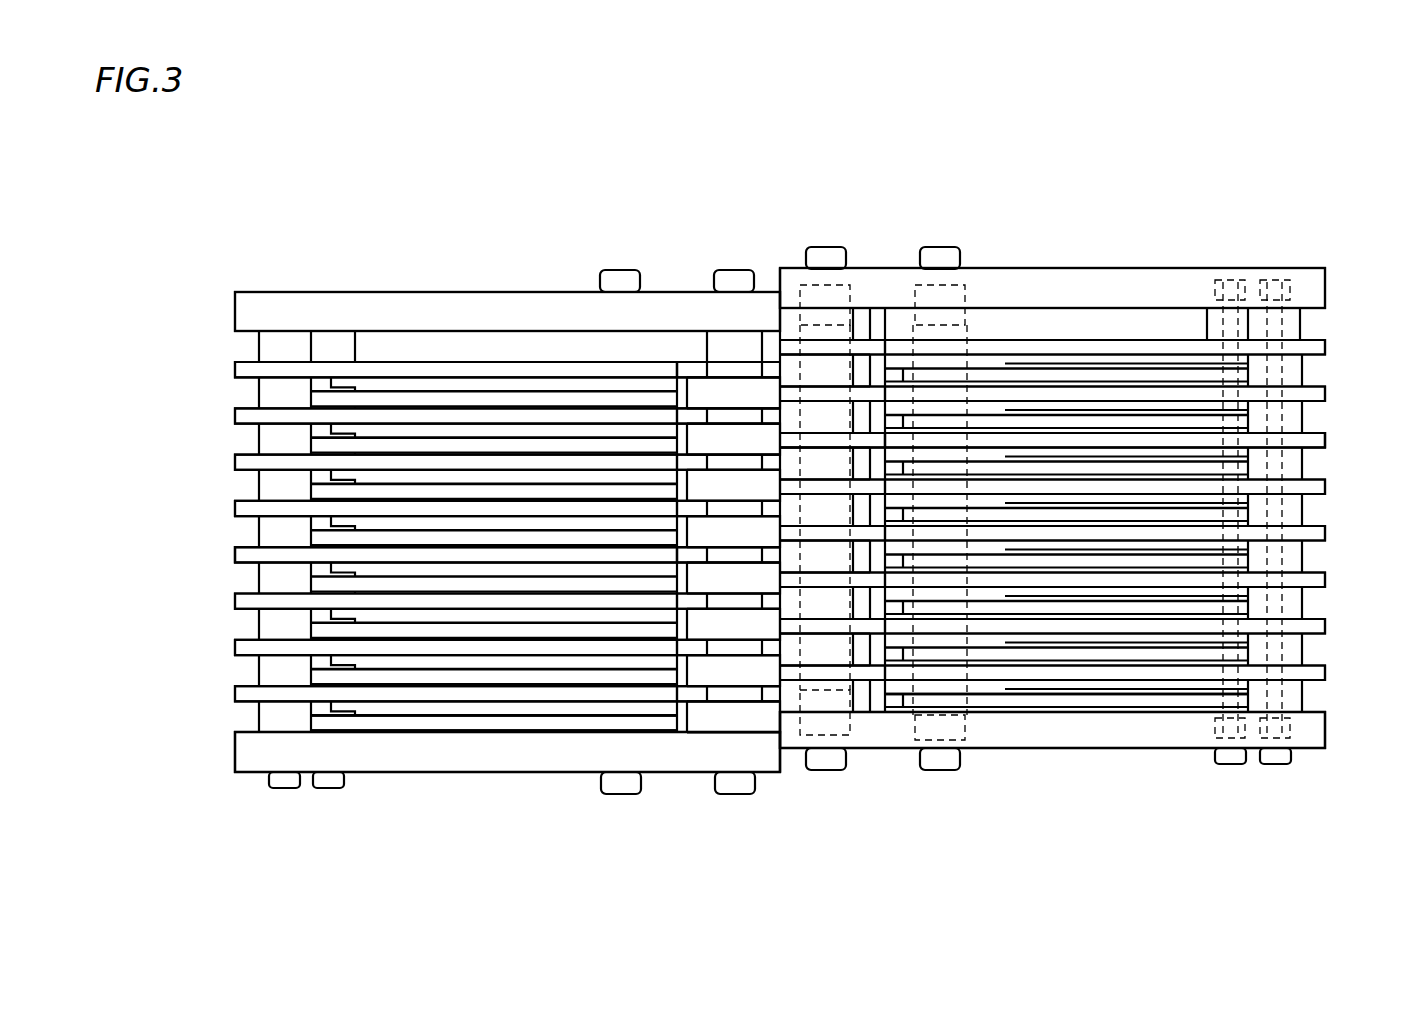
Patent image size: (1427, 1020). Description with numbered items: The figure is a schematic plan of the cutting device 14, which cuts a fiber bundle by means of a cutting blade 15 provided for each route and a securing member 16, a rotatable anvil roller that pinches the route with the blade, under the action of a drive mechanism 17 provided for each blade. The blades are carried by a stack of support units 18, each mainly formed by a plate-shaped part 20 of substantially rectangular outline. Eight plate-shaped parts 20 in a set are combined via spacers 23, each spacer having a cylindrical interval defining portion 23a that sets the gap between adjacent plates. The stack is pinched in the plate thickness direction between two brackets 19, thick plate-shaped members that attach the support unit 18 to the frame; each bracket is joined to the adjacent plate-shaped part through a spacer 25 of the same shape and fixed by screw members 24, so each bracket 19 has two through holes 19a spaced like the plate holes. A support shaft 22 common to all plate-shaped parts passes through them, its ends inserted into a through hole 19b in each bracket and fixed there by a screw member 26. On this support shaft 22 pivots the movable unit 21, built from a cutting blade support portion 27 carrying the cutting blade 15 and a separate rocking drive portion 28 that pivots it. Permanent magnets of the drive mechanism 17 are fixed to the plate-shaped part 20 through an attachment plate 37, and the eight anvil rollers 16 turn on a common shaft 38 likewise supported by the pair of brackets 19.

The cutting device 14 is at (284, 169).
The cutting blade 15 is at (678, 355).
The securing member 16 is at (717, 385).
The drive mechanism 17 is at (206, 397).
The support unit 18 is at (451, 349).
The bracket 19 is at (385, 300).
The through hole 19a is at (1232, 300).
The through hole for support shaft 19b is at (918, 285).
The plate-shaped part 20 is at (510, 385).
The movable unit 21 is at (577, 745).
The support shaft 22 is at (585, 350).
The spacer 23 is at (252, 538).
The interval defining portion 23a is at (262, 577).
The screw member 24 is at (284, 790).
The spacer 25 is at (274, 322).
The screw member 26 is at (622, 270).
The cutting blade support portion 27 is at (660, 720).
The rocking drive portion 28 is at (423, 725).
The attachment plate 37 is at (537, 380).
The shaft 38 is at (762, 355).